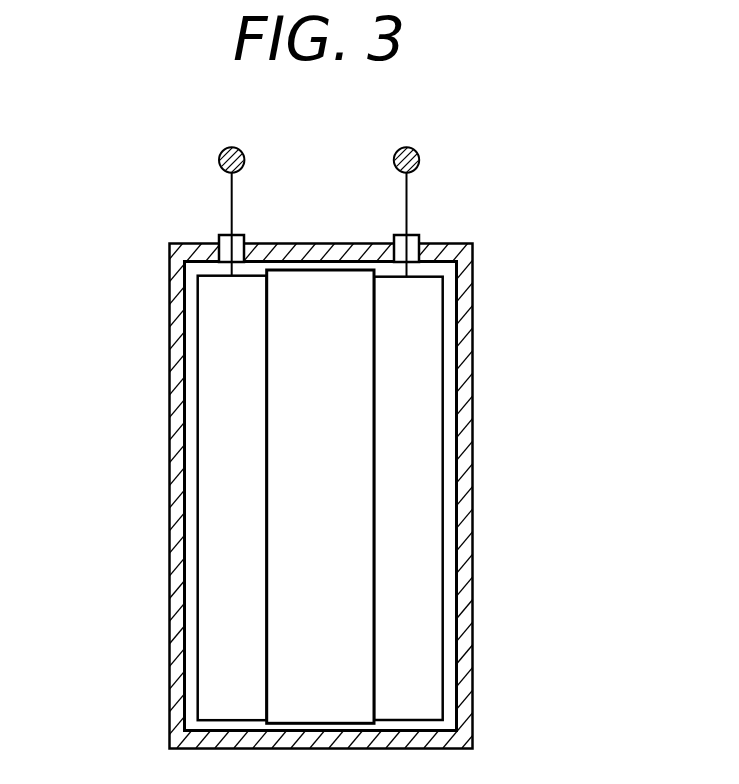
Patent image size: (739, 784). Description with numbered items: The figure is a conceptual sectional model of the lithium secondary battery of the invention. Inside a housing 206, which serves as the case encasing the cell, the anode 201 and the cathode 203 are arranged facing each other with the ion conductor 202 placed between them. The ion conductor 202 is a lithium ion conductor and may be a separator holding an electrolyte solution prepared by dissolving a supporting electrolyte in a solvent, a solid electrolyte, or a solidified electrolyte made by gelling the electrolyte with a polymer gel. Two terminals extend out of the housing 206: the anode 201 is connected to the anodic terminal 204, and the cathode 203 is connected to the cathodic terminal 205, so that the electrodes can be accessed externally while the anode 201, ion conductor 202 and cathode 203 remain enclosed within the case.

The anode 201 is at (213, 473).
The ion conductor 202 is at (343, 369).
The cathode 203 is at (403, 512).
The anodic terminal 204 is at (232, 146).
The cathodic terminal 205 is at (406, 146).
The housing 206 is at (464, 581).